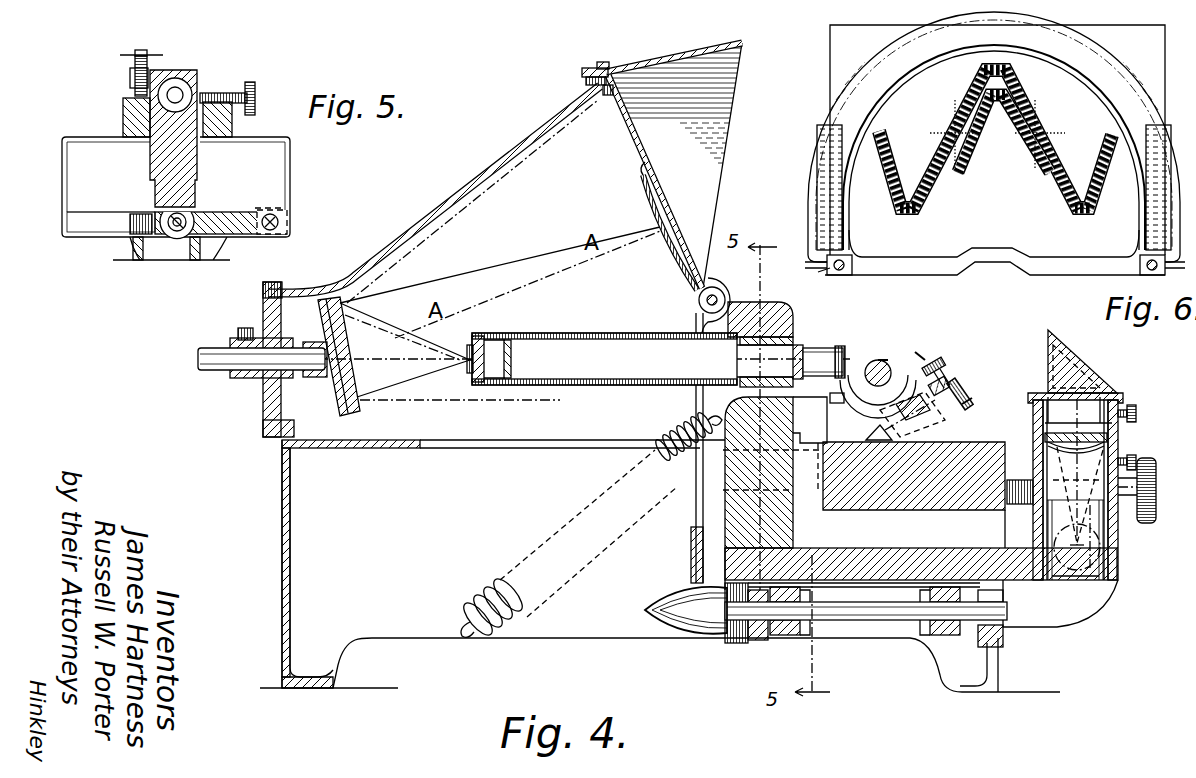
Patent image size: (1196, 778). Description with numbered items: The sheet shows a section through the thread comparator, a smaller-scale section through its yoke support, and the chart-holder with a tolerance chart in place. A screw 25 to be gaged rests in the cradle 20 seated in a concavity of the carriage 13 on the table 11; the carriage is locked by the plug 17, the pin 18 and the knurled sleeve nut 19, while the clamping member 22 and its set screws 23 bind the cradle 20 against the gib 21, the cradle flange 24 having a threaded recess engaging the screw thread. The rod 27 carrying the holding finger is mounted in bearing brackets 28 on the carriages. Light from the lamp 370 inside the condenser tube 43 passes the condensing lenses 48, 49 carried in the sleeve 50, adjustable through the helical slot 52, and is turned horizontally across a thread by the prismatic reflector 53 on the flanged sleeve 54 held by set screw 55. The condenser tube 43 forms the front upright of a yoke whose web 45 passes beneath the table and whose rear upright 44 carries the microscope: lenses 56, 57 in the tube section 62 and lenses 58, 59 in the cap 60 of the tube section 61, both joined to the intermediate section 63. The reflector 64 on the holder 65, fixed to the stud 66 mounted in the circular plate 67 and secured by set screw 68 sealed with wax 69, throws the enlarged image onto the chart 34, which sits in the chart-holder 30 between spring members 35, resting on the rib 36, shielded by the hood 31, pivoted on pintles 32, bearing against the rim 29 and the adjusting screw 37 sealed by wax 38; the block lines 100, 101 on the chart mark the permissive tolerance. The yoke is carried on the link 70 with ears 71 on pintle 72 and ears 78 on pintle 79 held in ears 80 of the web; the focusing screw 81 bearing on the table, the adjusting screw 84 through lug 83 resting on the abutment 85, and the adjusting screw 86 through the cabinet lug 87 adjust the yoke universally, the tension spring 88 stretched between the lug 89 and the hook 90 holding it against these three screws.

In FIG. 5, the adjusting screw 84 is at (148, 53).
In FIG. 5, the adjusting screw 86 is at (250, 82).
In FIG. 5, the laterally projecting lug 83 is at (130, 78).
In FIG. 5, the abutment 85 is at (123, 108).
In FIG. 5, the upright lug 87 is at (232, 124).
In FIG. 5, the rear upright 44 is at (150, 187).
In FIG. 4, the rear upright 44 is at (675, 488).
In FIG. 5, the ears 71 is at (272, 208).
In FIG. 5, the pintle 72 is at (281, 220).
In FIG. 5, the link 70 is at (240, 232).
In FIG. 5, the ears 78 is at (168, 237).
In FIG. 4, the ears 78 is at (786, 638).
In FIG. 5, the pintle 79 is at (182, 231).
In FIG. 4, the pintle 79 is at (756, 642).
In FIG. 6, the tolerance chart 34 is at (832, 37).
In FIG. 4, the tolerance chart 34 is at (648, 155).
In FIG. 6, the spring members 35 is at (862, 128).
In FIG. 4, the spring members 35 is at (668, 258).
In FIG. 6, the block broken line 100 is at (1060, 153).
In FIG. 6, the block broken line 101 is at (1043, 187).
In FIG. 6, the chart-holder 30 is at (1157, 210).
In FIG. 4, the chart-holder 30 is at (613, 70).
In FIG. 6, the pintles 32 is at (817, 267).
In FIG. 4, the flat rim 29 is at (602, 68).
In FIG. 4, the flange or hood 31 is at (693, 50).
In FIG. 4, the sealing wax 38 is at (582, 78).
In FIG. 4, the adjusting screw 37 is at (608, 95).
In FIG. 4, the rib or shoulder 36 is at (699, 297).
In FIG. 4, the intermediate section 63 is at (752, 302).
In FIG. 4, the helical slot 52 is at (822, 272).
In FIG. 4, the lens 57 is at (810, 347).
In FIG. 4, the tube section 62 is at (838, 345).
In FIG. 4, the flange 24 is at (888, 360).
In FIG. 4, the screw 25 is at (920, 355).
In FIG. 4, the set screws 23 is at (930, 366).
In FIG. 4, the rod 27 is at (942, 377).
In FIG. 4, the bearing brackets 28 is at (962, 383).
In FIG. 4, the prismatic reflector 53 is at (1090, 363).
In FIG. 4, the flanged sleeve 54 is at (1110, 397).
In FIG. 4, the set screw 55 is at (1136, 410).
In FIG. 4, the condensing lens 49 is at (1108, 435).
In FIG. 4, the condensing lens 48 is at (1108, 455).
In FIG. 4, the focusing screw 81 is at (1157, 470).
In FIG. 4, the sleeve 50 is at (1105, 497).
In FIG. 4, the condenser tube 43 is at (1110, 550).
In FIG. 4, the source of light 370 is at (1107, 567).
In FIG. 4, the sleeve nut 19 is at (968, 410).
In FIG. 4, the pin 18 is at (930, 428).
In FIG. 4, the table 11 is at (977, 447).
In FIG. 4, the carriage 13 is at (930, 442).
In FIG. 4, the plug 17 is at (877, 428).
In FIG. 4, the cradle 20 is at (855, 407).
In FIG. 4, the gib 21 is at (835, 397).
In FIG. 4, the clamping member 22 is at (878, 396).
In FIG. 4, the lens 56 is at (871, 361).
In FIG. 4, the cap 60 is at (497, 336).
In FIG. 4, the tube section 61 is at (612, 386).
In FIG. 4, the lug 89 is at (710, 406).
In FIG. 4, the lens 59 is at (475, 372).
In FIG. 4, the lens 58 is at (509, 384).
In FIG. 4, the reflector 64 is at (358, 402).
In FIG. 4, the holder 65 is at (332, 378).
In FIG. 4, the stud 66 is at (216, 364).
In FIG. 4, the circular plate 67 is at (272, 385).
In FIG. 4, the set screw 68 is at (230, 340).
In FIG. 4, the sealing wax 69 is at (245, 327).
In FIG. 4, the tension spring 88 is at (658, 458).
In FIG. 4, the hook 90 is at (462, 633).
In FIG. 4, the ears 80 is at (724, 643).
In FIG. 4, the web 45 is at (887, 582).